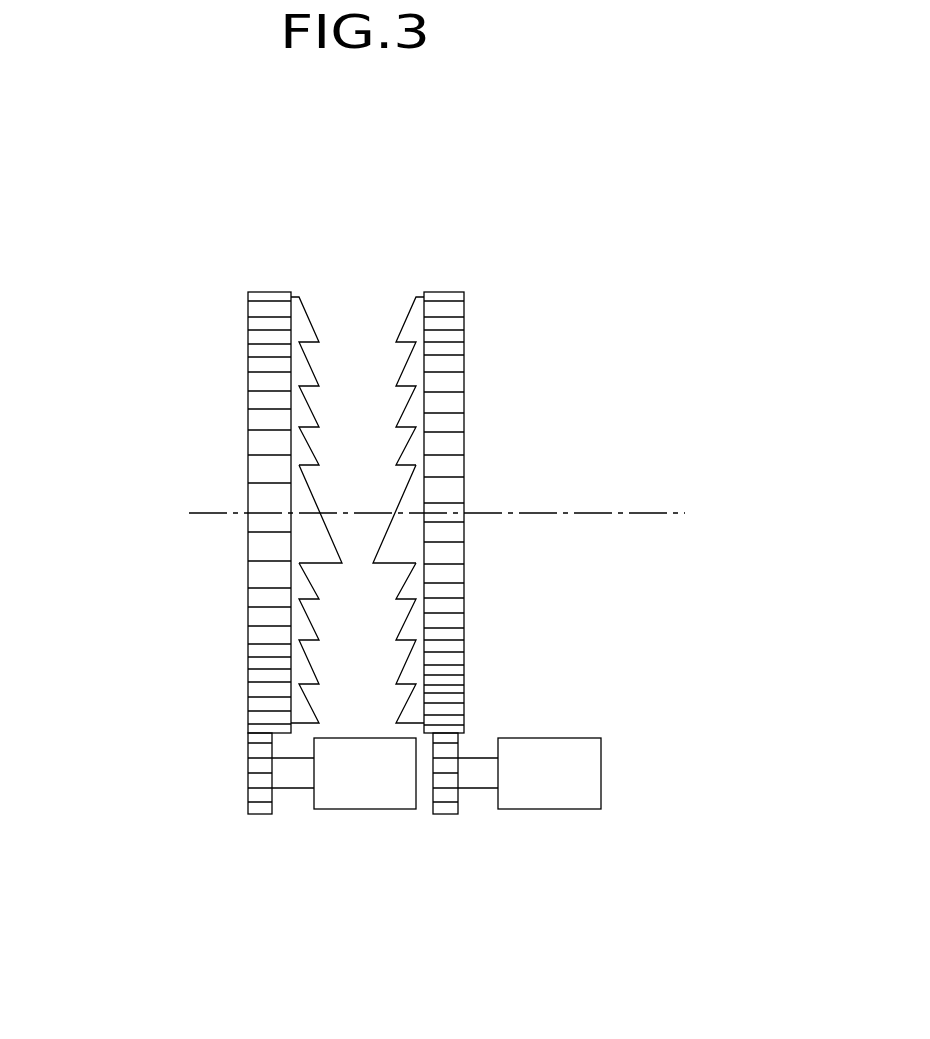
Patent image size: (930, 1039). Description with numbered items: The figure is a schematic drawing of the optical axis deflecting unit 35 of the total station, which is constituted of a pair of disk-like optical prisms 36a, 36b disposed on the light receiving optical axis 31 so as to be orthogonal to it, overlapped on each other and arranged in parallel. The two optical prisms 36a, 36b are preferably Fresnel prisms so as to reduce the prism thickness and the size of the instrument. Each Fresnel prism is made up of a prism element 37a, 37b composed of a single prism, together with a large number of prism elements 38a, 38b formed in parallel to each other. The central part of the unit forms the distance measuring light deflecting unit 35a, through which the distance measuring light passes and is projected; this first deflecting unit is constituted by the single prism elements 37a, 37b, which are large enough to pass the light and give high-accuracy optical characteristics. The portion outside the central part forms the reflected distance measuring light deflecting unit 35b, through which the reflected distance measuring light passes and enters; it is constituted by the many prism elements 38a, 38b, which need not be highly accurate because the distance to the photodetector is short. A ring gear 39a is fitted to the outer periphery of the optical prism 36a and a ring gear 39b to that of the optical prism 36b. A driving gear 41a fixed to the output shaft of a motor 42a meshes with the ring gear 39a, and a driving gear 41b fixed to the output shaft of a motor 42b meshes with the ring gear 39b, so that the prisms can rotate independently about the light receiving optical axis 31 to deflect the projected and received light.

The optical axis deflecting unit 35 is at (367, 113).
The light receiving optical axis 31 is at (548, 514).
The distance measuring light deflecting unit 35a is at (240, 529).
The reflected distance measuring light deflecting unit 35b is at (240, 372).
The optical prism 36a is at (175, 456).
The optical prism 36b is at (519, 459).
The prism element 37a is at (313, 498).
The prism element 37b is at (386, 533).
The prism elements 38a is at (213, 440).
The prism elements 38b is at (494, 445).
The ring gear 39a is at (263, 668).
The ring gear 39b is at (447, 638).
The driving gear 41a is at (253, 814).
The driving gear 41b is at (446, 814).
The motor 42a is at (337, 810).
The motor 42b is at (520, 812).